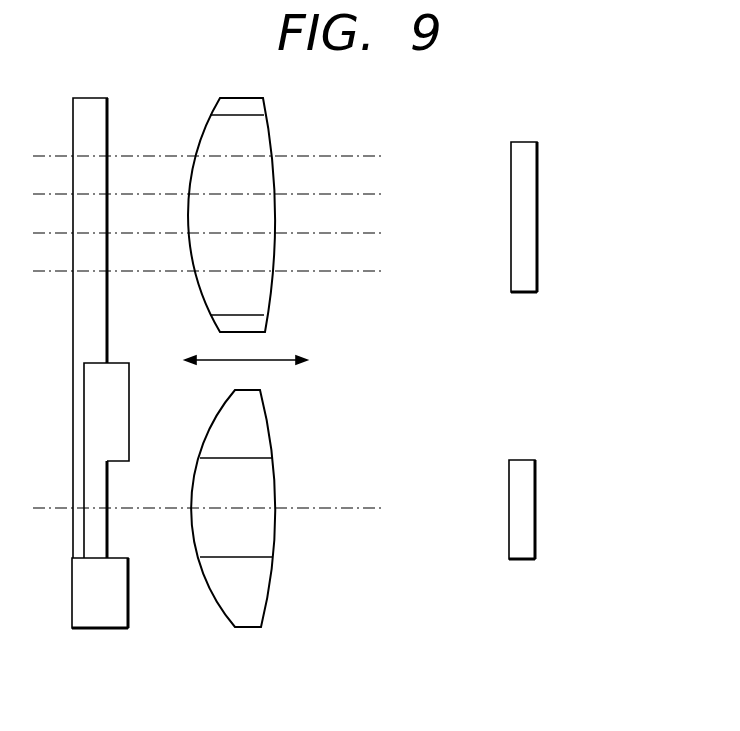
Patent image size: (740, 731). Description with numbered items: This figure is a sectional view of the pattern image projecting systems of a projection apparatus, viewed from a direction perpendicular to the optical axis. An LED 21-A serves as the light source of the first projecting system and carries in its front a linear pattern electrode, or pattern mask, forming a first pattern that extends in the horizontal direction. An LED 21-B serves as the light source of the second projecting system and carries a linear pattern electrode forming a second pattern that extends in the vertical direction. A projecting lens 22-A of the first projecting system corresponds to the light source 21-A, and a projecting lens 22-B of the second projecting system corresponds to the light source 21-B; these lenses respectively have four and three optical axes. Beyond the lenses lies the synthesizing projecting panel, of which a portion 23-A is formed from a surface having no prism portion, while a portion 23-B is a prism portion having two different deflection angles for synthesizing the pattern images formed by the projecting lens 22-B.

The LED 21-A is at (537, 272).
The LED 21-B is at (535, 540).
The projecting lens 22-A is at (272, 295).
The projecting lens 22-B is at (268, 598).
The portion having no prism portion 23-A is at (92, 98).
The prism portion 23-B is at (98, 628).